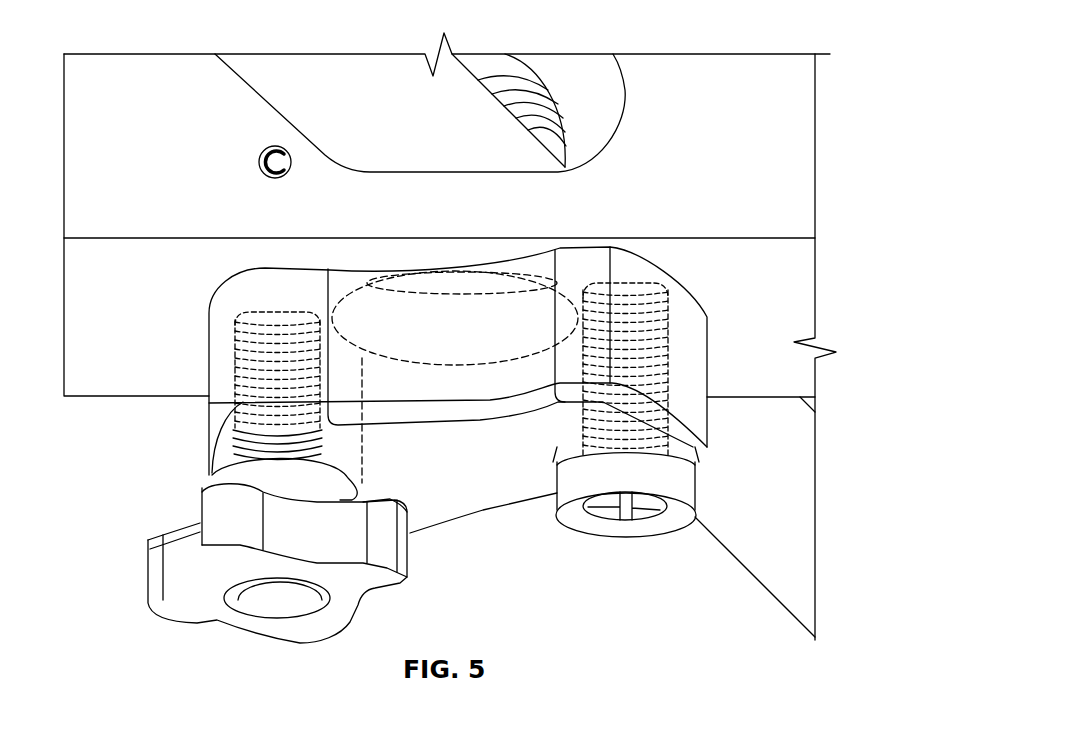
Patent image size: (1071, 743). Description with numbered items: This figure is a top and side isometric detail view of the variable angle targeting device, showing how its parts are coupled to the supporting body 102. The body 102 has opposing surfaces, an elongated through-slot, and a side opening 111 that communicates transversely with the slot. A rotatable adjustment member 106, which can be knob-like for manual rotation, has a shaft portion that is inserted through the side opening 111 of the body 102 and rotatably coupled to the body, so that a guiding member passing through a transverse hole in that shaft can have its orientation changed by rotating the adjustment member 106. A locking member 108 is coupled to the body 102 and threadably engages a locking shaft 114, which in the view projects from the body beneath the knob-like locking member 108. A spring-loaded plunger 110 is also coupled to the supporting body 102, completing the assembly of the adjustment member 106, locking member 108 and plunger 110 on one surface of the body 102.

The supporting body 102 is at (708, 73).
The rotatable adjustment member 106 is at (205, 407).
The locking member 108 is at (158, 572).
The spring-loaded plunger 110 is at (612, 512).
The side opening 111 is at (417, 338).
The locking shaft 114 is at (272, 610).